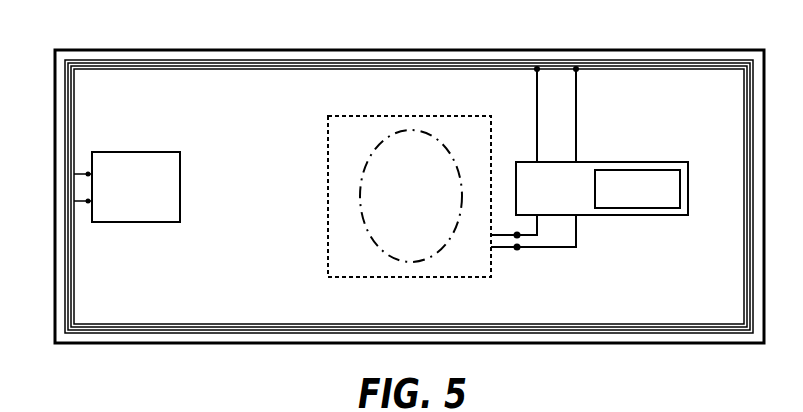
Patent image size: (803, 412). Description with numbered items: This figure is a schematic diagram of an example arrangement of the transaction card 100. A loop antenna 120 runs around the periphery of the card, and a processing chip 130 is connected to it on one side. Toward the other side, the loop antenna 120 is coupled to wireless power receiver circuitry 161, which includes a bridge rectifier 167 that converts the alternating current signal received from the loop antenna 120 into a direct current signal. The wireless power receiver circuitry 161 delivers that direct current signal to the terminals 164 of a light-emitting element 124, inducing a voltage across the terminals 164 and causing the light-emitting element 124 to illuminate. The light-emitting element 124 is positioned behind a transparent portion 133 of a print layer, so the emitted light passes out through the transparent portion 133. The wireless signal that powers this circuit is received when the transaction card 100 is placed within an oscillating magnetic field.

The transaction card 100 is at (107, 48).
The loop antenna 120 is at (232, 63).
The light-emitting element 124 is at (422, 115).
The processing chip 130 is at (115, 199).
The transparent portion 133 is at (395, 263).
The wireless power receiver circuitry 161 is at (538, 201).
The terminals 164 is at (522, 256).
The bridge rectifier 167 is at (616, 201).